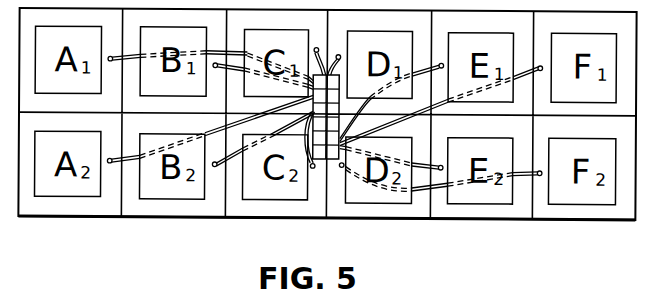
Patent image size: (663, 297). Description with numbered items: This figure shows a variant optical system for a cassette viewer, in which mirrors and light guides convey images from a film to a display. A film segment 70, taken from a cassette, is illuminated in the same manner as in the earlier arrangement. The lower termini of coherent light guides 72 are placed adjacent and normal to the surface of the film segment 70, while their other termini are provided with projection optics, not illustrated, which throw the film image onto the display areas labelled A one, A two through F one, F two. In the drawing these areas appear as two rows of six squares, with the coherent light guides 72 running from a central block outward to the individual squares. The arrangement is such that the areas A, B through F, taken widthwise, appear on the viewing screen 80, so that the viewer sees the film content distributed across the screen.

The film segment 70 is at (322, 168).
The coherent light guides 72 is at (128, 164).
The viewing screen 80 is at (543, 212).